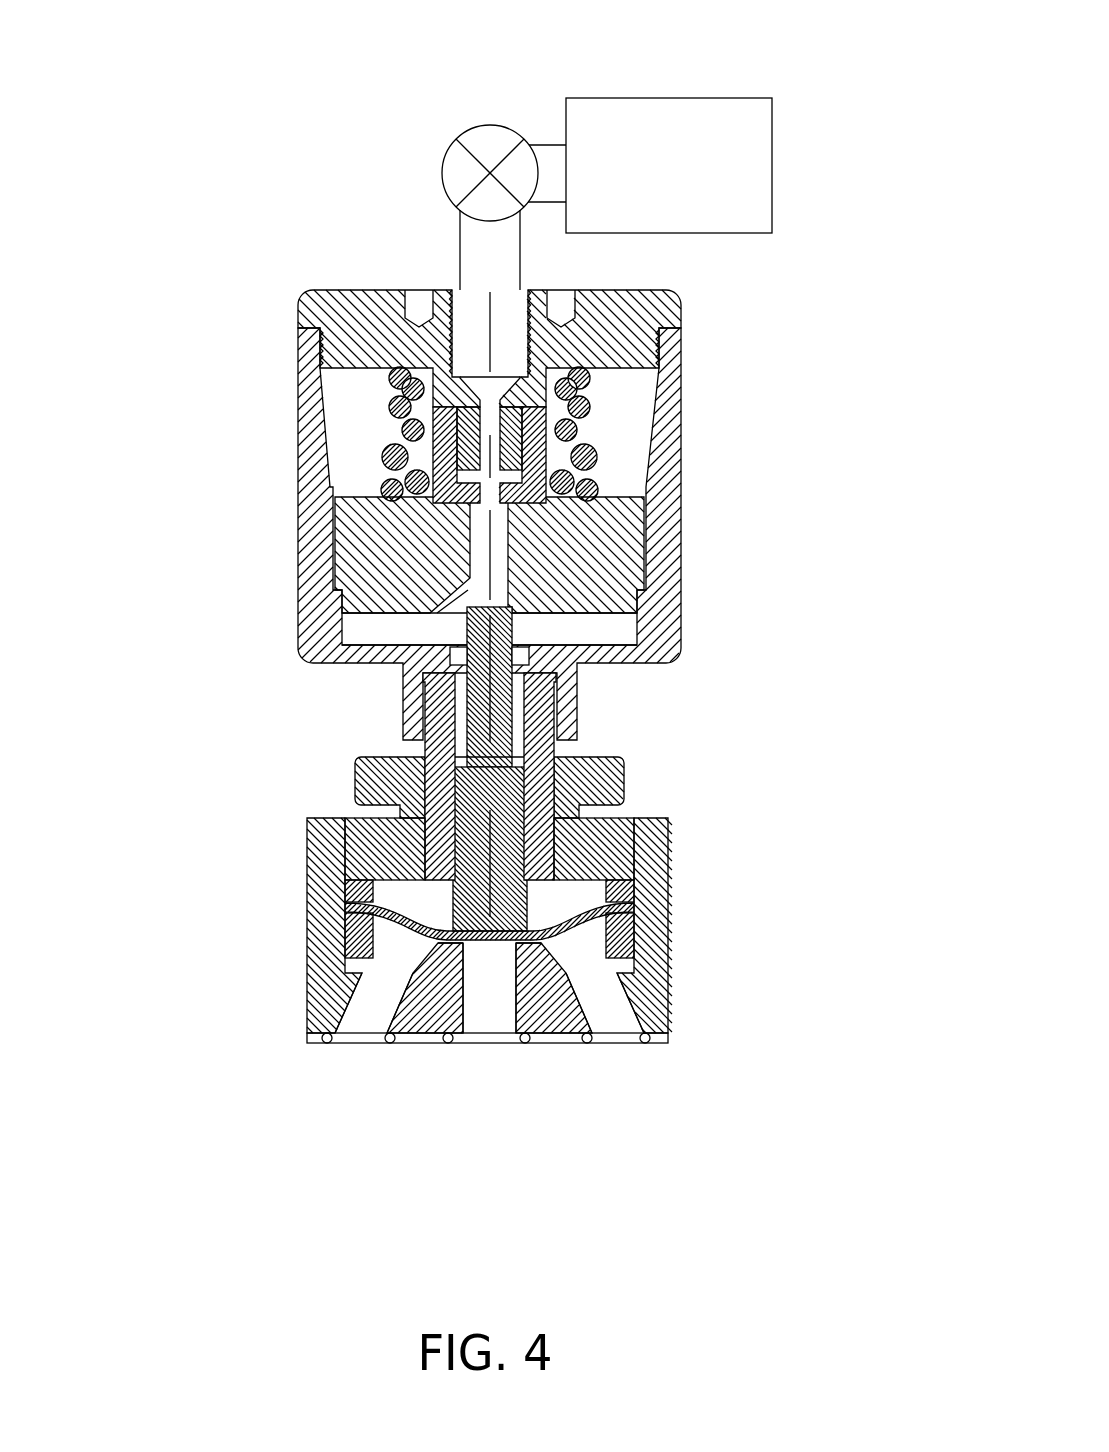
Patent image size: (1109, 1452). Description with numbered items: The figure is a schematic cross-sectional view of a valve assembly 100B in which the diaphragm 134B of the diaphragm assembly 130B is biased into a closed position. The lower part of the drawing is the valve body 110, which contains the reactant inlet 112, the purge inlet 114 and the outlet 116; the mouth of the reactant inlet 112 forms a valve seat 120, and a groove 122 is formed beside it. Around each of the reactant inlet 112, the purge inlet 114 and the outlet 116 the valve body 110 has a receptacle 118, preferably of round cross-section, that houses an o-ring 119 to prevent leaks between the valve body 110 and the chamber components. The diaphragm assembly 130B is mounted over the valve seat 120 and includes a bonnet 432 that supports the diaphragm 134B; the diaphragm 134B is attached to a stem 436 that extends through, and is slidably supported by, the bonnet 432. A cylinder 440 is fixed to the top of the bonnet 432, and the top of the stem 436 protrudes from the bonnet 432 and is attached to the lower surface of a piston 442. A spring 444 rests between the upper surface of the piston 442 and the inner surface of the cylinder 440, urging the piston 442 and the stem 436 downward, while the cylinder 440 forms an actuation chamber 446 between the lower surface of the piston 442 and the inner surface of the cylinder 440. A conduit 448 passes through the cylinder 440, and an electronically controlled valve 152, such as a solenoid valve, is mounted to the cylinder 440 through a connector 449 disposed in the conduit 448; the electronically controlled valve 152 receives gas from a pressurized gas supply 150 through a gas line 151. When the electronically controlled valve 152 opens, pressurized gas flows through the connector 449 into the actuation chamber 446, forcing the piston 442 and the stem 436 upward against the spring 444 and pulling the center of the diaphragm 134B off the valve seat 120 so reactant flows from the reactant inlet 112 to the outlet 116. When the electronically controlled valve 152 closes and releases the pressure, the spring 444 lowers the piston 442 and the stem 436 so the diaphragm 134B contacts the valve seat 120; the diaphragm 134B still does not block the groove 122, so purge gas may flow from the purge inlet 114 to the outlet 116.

The valve assembly 100B is at (330, 97).
The valve body 110 is at (270, 841).
The reactant inlet 112 is at (490, 1025).
The purge inlet 114 is at (607, 1030).
The outlet 116 is at (367, 1025).
The receptacle 118 is at (305, 1030).
The o-ring 119 is at (327, 1045).
The valve seat 120 is at (530, 933).
The groove 122 is at (420, 1025).
The diaphragm assembly 130B is at (268, 433).
The diaphragm 134B is at (523, 935).
The pressurized gas supply 150 is at (743, 235).
The gas line 151 is at (544, 143).
The electronically controlled valve 152 is at (498, 126).
The bonnet 432 is at (603, 756).
The stem 436 is at (497, 705).
The cylinder 440 is at (296, 365).
The piston 442 is at (338, 536).
The spring 444 is at (583, 395).
The actuation chamber 446 is at (350, 630).
The conduit 448 is at (460, 300).
The connector 449 is at (500, 258).